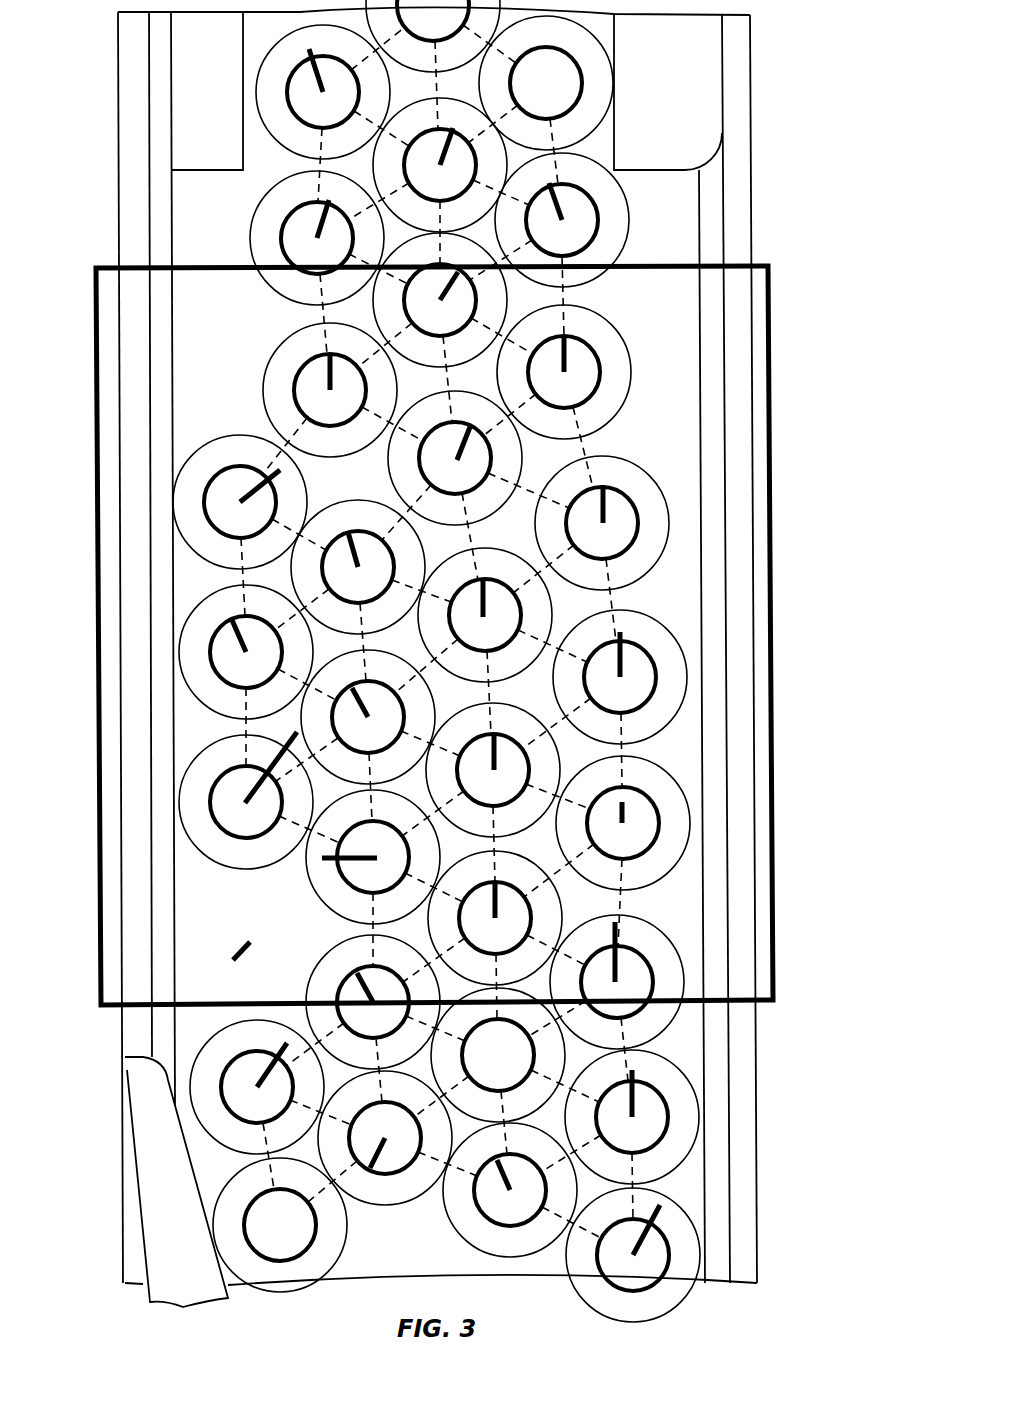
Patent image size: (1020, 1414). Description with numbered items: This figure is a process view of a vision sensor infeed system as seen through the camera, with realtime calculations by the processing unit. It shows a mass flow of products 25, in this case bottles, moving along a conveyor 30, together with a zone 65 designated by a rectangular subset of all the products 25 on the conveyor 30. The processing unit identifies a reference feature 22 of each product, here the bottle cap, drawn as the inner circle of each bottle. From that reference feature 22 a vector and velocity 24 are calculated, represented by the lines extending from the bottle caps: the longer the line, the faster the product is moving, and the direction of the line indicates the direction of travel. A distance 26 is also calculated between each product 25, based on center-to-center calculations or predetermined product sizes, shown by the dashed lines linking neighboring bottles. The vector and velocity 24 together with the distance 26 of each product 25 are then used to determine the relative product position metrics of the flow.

The reference feature 22 is at (228, 668).
The vector and velocity 24 is at (247, 480).
The products 25 is at (615, 368).
The distance 26 is at (243, 727).
The conveyor 30 is at (663, 212).
The zone 65 is at (774, 322).